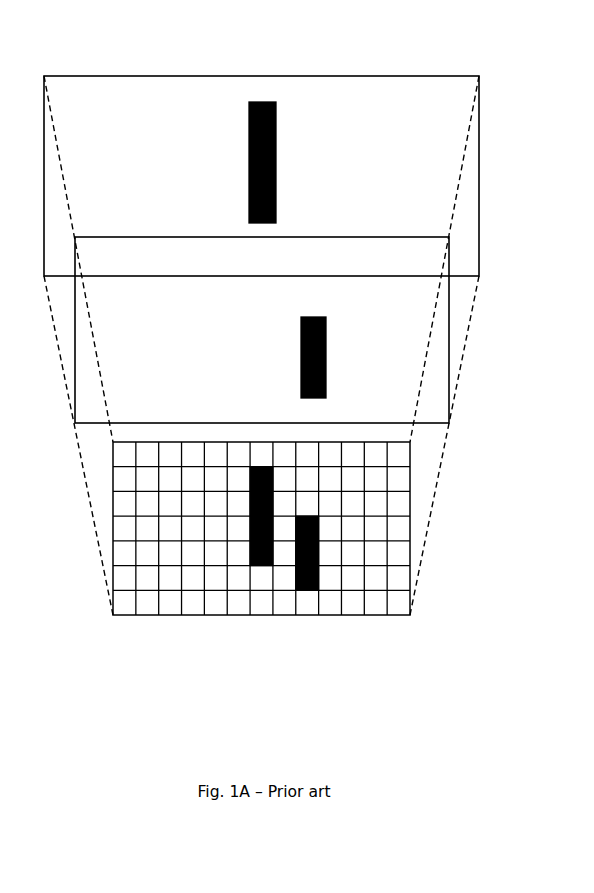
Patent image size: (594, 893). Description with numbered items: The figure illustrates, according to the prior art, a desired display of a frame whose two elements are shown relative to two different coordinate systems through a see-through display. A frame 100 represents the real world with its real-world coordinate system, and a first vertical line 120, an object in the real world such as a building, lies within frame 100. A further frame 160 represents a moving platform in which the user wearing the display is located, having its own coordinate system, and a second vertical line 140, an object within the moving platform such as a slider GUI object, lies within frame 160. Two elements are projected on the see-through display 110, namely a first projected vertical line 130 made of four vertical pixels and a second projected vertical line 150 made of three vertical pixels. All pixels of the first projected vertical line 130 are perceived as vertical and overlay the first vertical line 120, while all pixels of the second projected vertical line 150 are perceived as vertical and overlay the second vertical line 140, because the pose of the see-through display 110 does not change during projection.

The frame 100 is at (479, 167).
The see-through display 110 is at (393, 615).
The first vertical line 120 is at (262, 102).
The first projected vertical line 130 is at (262, 565).
The second vertical line 140 is at (300, 340).
The second projected vertical line 150 is at (318, 518).
The frame 160 is at (449, 287).